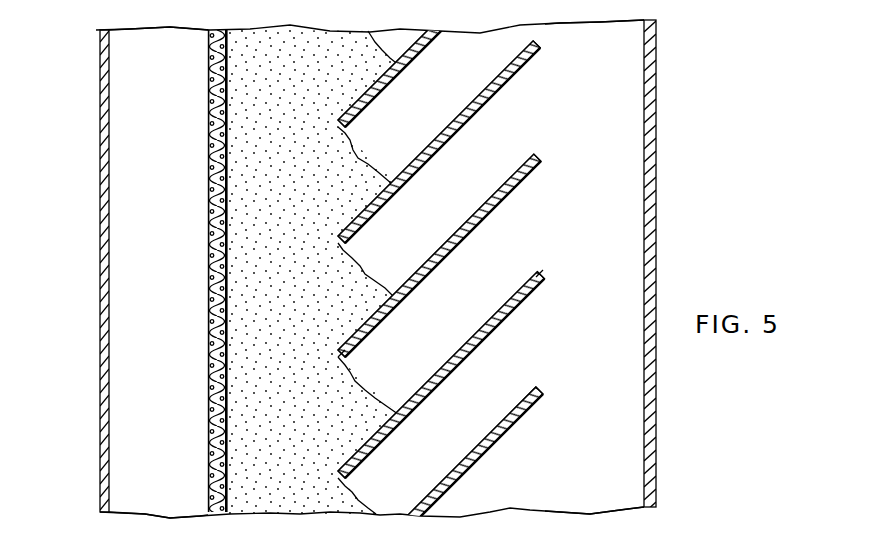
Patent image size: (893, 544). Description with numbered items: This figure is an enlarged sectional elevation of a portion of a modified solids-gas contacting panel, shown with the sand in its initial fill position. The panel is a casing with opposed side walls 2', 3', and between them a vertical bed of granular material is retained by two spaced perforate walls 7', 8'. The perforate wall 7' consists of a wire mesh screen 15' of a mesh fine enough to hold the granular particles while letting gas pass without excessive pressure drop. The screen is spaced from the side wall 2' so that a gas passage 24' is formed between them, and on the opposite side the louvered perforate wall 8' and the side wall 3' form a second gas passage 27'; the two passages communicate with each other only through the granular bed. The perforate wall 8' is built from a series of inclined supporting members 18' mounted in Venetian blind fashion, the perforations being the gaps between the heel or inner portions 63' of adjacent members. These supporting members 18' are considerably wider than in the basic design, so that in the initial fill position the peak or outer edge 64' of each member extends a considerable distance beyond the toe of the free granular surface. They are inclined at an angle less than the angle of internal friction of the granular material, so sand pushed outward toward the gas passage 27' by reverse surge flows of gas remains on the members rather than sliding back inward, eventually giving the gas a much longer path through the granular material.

The casing side wall 2' is at (83, 271).
The gas passage 24' is at (130, 272).
The perforate wall 7' is at (188, 271).
The wire mesh screen 15' is at (187, 271).
The supporting member 18' is at (439, 147).
The perforate wall 8' is at (439, 255).
The inner portion 63' is at (321, 346).
The outer edge 64' is at (571, 257).
The gas passage 27' is at (643, 267).
The casing side wall 3' is at (690, 263).